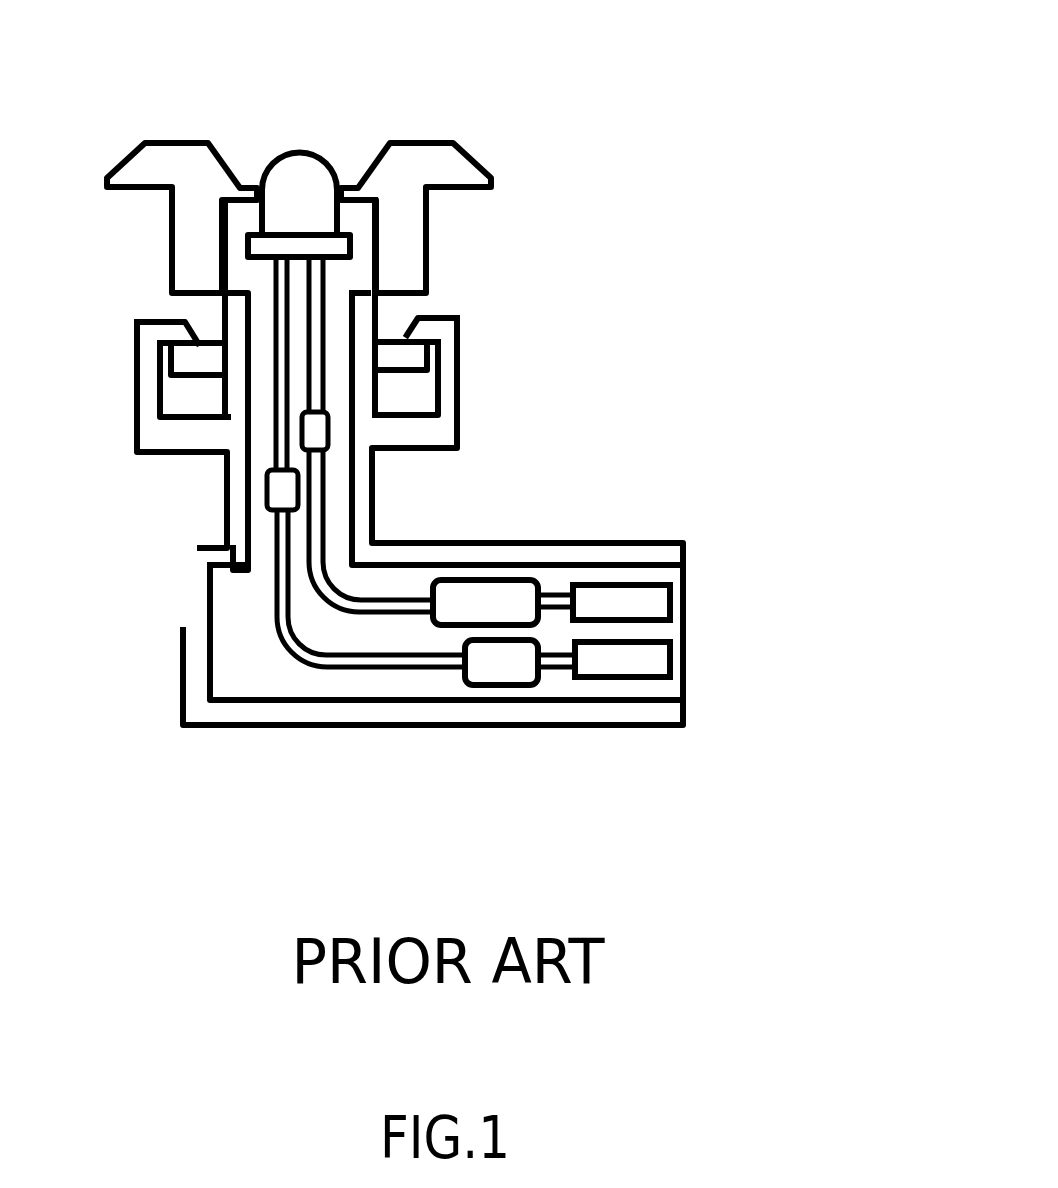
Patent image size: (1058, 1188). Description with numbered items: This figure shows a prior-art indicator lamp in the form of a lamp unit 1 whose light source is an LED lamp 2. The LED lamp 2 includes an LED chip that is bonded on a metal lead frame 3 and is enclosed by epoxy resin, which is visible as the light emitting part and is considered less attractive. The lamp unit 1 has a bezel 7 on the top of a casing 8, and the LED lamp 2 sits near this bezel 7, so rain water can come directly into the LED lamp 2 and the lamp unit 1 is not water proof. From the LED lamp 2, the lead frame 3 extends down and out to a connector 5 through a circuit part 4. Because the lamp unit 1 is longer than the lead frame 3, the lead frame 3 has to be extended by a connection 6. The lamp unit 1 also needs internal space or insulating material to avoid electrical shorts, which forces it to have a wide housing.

The lamp unit 1 is at (700, 207).
The LED lamp 2 is at (308, 173).
The metal lead frame 3 is at (325, 319).
The circuit part 4 is at (487, 598).
The connector 5 is at (657, 602).
The connection 6 is at (318, 429).
The bezel 7 is at (172, 170).
The casing 8 is at (150, 433).